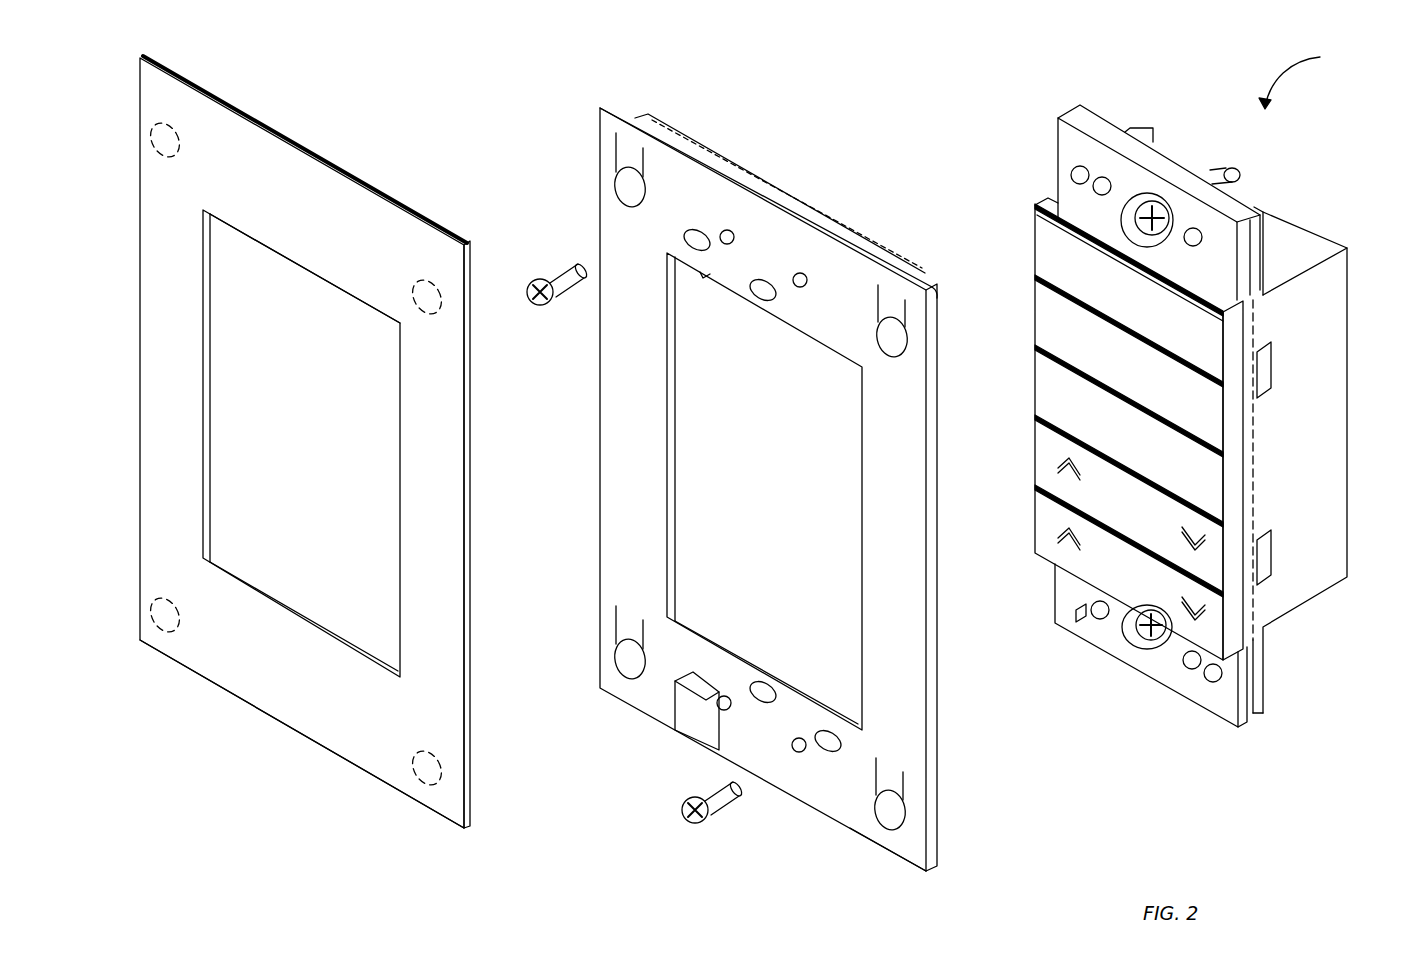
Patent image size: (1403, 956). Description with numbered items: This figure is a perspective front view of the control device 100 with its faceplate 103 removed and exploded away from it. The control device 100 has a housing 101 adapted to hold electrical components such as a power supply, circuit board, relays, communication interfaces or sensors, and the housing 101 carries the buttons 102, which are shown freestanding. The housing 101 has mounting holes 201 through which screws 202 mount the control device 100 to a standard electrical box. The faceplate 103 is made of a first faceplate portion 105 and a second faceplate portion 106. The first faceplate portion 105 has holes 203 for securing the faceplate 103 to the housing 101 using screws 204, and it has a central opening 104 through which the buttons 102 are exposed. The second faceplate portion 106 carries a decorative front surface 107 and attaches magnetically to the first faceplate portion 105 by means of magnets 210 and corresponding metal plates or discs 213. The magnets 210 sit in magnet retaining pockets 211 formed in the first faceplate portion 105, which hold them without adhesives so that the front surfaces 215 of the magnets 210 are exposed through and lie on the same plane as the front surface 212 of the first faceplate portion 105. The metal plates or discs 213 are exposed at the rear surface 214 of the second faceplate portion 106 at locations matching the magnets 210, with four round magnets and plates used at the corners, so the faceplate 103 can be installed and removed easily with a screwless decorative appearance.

The control device 100 is at (1313, 76).
The housing 101 is at (1297, 238).
The buttons 102 is at (1045, 245).
The faceplate 103 is at (600, 108).
The central opening 104 is at (727, 393).
The first faceplate portion 105 is at (757, 178).
The second faceplate portion 106 is at (325, 155).
The decorative front surface 107 is at (318, 708).
The mounting holes 201 is at (1135, 198).
The screws 202 is at (1157, 222).
The holes 203 is at (760, 298).
The screws 204 is at (563, 270).
The magnets 210 is at (625, 180).
The magnet retaining pockets 211 is at (615, 165).
The front surface 212 is at (652, 705).
The metal plates or discs 213 is at (176, 148).
The rear surface 214 is at (470, 486).
The front surfaces 215 is at (895, 810).